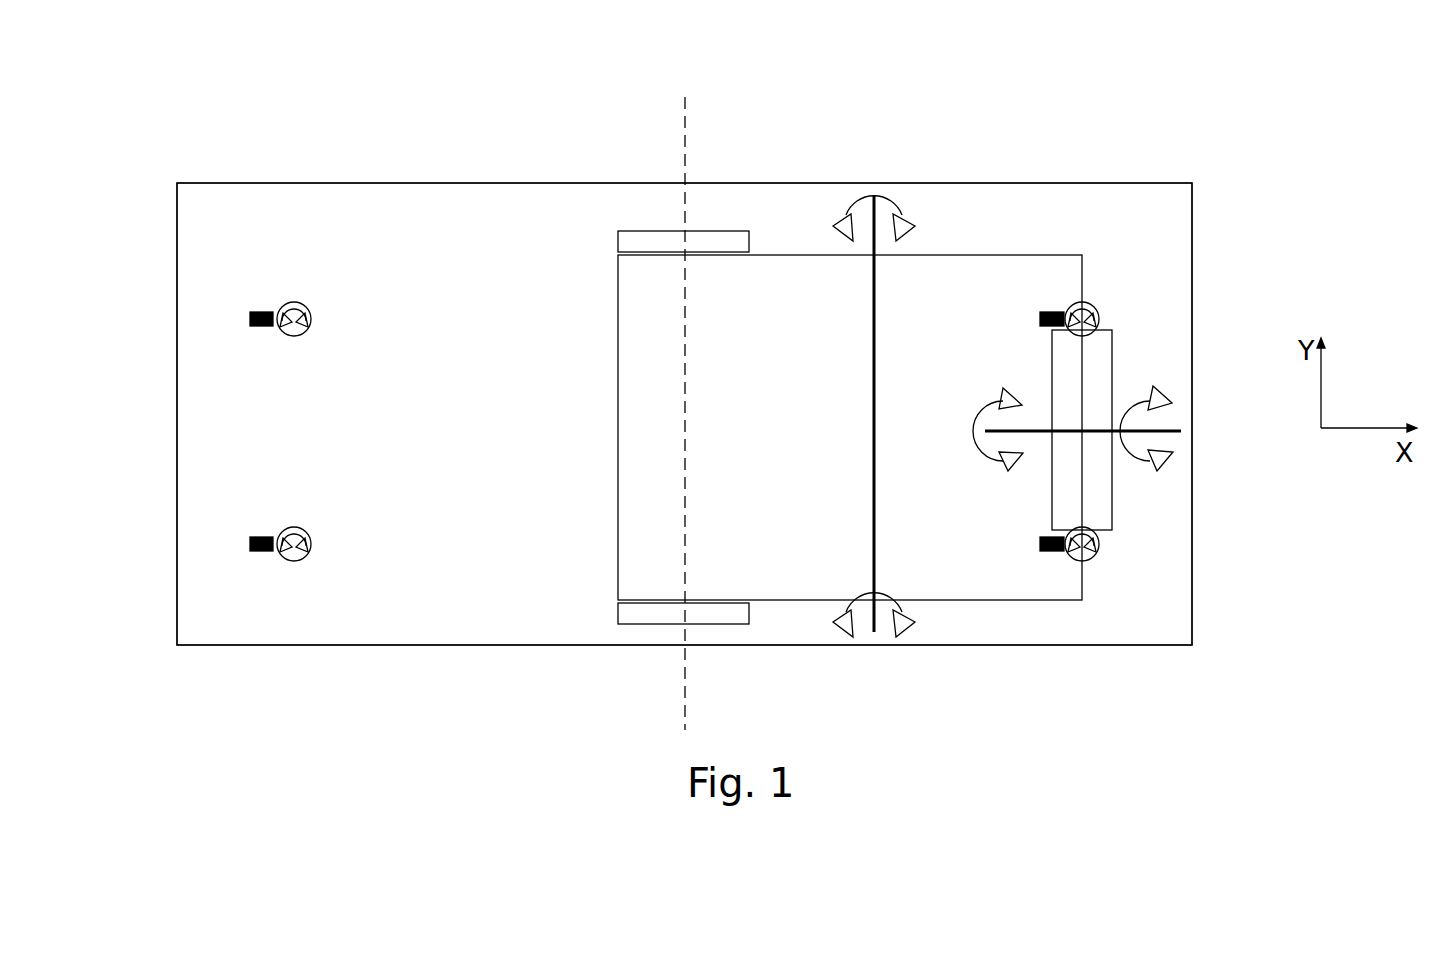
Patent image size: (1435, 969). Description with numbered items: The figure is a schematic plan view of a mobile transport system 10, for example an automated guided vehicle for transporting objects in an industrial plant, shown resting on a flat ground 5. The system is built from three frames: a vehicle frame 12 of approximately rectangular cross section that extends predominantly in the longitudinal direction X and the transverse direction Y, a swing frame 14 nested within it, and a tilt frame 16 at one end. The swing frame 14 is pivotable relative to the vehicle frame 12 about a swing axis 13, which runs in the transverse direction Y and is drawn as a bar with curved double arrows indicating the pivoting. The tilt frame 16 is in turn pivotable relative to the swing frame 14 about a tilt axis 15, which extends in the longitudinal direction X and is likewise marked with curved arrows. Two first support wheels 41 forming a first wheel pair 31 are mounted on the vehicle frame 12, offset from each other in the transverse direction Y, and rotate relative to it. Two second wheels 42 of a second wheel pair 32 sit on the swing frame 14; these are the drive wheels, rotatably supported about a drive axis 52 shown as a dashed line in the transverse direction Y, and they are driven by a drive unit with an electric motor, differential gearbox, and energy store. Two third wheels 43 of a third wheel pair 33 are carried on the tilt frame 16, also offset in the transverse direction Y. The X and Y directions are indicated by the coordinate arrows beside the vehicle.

The mobile transport system 10 is at (128, 183).
The flat ground 5 is at (143, 405).
The vehicle frame 12 is at (370, 208).
The drive axis 52 is at (685, 145).
The swing frame 14 is at (951, 280).
The swing axis 13 is at (873, 470).
The first wheel pair 31 is at (348, 431).
The first support wheels 41 is at (297, 322).
The second wheel pair 32 is at (609, 427).
The second wheels 42 is at (645, 245).
The third wheel pair 33 is at (990, 431).
The third wheels 43 is at (1042, 325).
The tilt frame 16 is at (1100, 358).
The tilt axis 15 is at (1163, 433).